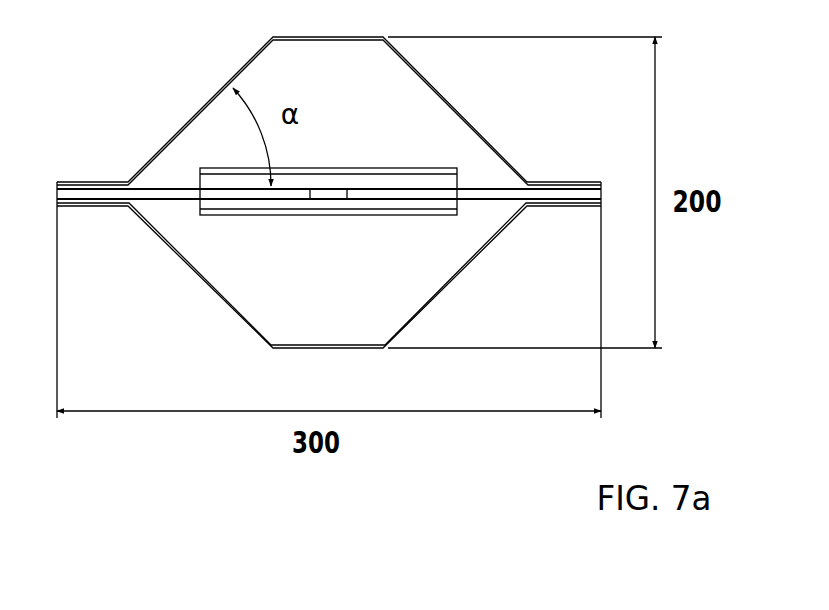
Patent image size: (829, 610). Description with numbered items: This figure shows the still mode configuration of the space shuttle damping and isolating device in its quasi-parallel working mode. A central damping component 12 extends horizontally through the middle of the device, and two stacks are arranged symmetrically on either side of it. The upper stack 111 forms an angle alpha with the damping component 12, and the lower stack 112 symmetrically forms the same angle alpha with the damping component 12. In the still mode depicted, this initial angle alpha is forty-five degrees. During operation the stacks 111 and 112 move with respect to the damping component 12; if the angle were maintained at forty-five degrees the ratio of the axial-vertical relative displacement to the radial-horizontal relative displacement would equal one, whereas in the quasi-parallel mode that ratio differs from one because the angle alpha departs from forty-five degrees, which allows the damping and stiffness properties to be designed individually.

The stack 111 is at (170, 138).
The stack 112 is at (183, 267).
The damping component 12 is at (328, 216).